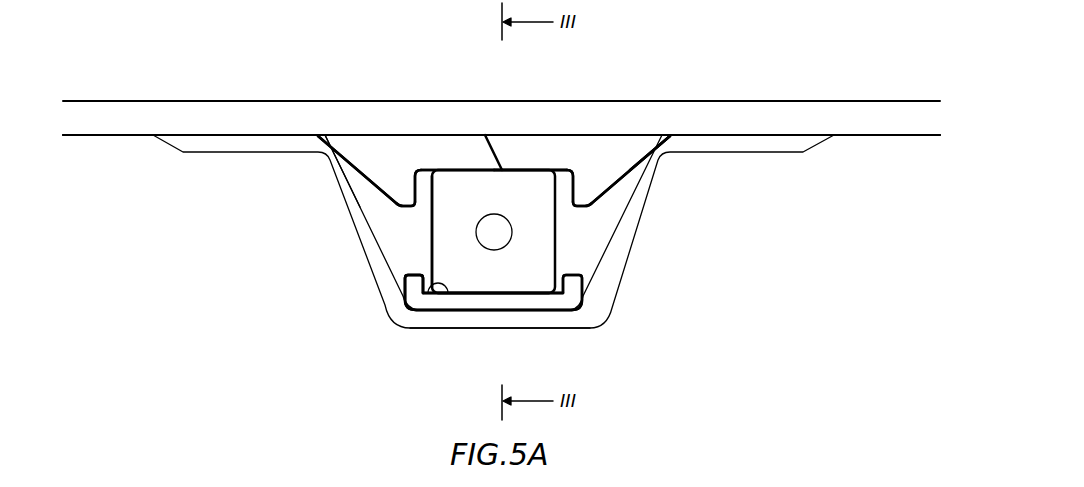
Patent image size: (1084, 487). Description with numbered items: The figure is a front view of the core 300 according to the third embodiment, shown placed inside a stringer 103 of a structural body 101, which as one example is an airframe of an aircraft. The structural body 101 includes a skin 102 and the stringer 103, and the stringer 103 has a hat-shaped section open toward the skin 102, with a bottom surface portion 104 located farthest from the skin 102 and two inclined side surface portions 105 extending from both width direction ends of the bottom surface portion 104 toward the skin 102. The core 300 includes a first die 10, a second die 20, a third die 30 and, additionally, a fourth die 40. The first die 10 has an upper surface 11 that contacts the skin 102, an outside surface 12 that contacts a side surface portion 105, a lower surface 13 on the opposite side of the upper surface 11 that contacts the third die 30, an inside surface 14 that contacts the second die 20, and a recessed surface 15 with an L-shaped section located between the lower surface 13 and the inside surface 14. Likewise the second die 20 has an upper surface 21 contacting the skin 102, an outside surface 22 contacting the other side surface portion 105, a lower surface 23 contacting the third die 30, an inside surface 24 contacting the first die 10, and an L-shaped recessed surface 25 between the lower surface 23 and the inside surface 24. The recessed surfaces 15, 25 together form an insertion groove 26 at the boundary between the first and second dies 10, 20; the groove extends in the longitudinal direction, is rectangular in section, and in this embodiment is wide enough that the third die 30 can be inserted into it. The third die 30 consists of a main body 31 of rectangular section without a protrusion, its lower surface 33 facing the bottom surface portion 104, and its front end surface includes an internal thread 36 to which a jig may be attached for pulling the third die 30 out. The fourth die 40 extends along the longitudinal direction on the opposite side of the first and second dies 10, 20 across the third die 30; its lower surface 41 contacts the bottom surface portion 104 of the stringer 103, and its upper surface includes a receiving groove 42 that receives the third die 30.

The structural body 101 is at (793, 99).
The skin 102 is at (197, 113).
The stringer 103 is at (616, 280).
The bottom surface portion 104 is at (556, 330).
The side surface portion 105 is at (365, 256).
The first die 10 is at (406, 171).
The upper surface 11 is at (382, 134).
The outside surface 12 is at (348, 163).
The lower surface 13 is at (400, 211).
The inside surface 14 is at (497, 160).
The recessed surface 15 is at (397, 210).
The second die 20 is at (582, 171).
The upper surface 21 is at (596, 134).
The outside surface 22 is at (634, 165).
The lower surface 23 is at (586, 216).
The inside surface 24 is at (504, 165).
The recessed surface 25 is at (566, 205).
The insertion groove 26 is at (510, 172).
The third die 30 is at (491, 231).
The main body 31 is at (494, 284).
The lower surface 33 is at (465, 294).
The internal thread 36 is at (478, 222).
The fourth die 40 is at (594, 314).
The lower surface 41 is at (532, 312).
The receiving groove 42 is at (405, 298).
The core 300 is at (400, 296).